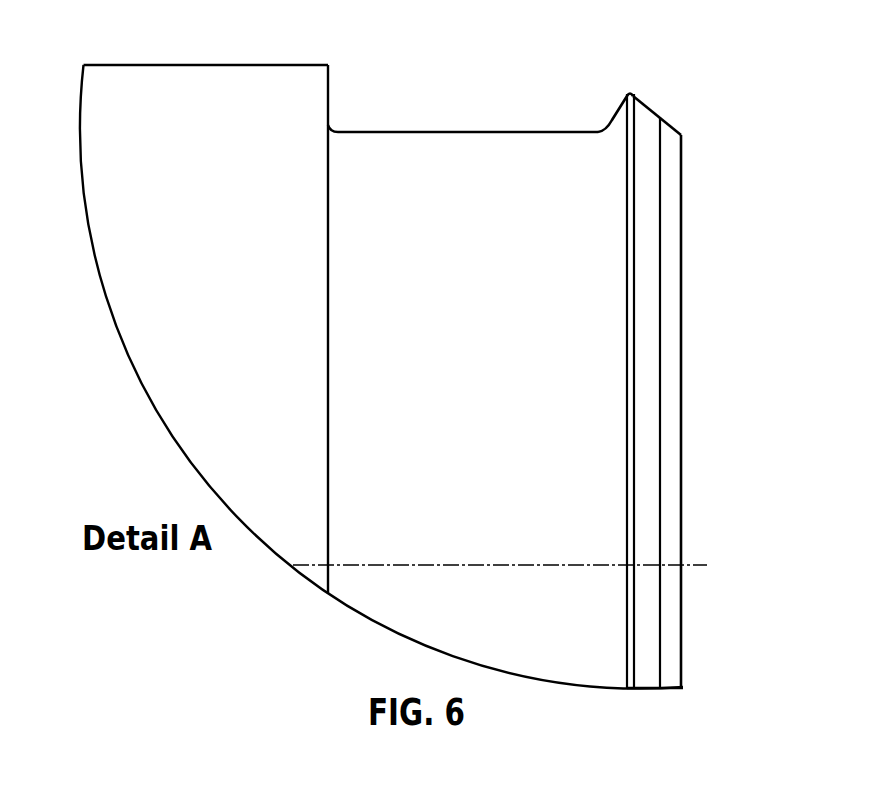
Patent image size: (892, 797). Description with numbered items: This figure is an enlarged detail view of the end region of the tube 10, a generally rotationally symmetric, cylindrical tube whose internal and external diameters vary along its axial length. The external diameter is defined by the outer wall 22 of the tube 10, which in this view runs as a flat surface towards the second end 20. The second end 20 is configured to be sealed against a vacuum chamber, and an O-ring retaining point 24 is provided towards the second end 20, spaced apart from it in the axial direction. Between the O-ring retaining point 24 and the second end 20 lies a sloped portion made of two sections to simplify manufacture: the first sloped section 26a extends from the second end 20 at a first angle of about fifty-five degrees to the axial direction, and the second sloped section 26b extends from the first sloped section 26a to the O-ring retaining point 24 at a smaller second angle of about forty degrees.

The tube 10 is at (425, 124).
The outer wall 22 is at (499, 130).
The O-ring retaining point 24 is at (630, 92).
The second sloped section 26b is at (647, 100).
The first sloped section 26a is at (679, 133).
The second end 20 is at (682, 228).